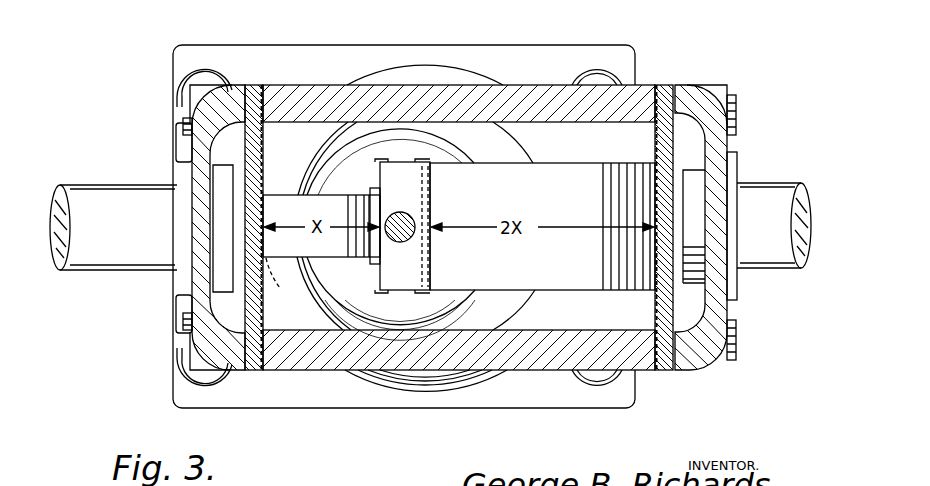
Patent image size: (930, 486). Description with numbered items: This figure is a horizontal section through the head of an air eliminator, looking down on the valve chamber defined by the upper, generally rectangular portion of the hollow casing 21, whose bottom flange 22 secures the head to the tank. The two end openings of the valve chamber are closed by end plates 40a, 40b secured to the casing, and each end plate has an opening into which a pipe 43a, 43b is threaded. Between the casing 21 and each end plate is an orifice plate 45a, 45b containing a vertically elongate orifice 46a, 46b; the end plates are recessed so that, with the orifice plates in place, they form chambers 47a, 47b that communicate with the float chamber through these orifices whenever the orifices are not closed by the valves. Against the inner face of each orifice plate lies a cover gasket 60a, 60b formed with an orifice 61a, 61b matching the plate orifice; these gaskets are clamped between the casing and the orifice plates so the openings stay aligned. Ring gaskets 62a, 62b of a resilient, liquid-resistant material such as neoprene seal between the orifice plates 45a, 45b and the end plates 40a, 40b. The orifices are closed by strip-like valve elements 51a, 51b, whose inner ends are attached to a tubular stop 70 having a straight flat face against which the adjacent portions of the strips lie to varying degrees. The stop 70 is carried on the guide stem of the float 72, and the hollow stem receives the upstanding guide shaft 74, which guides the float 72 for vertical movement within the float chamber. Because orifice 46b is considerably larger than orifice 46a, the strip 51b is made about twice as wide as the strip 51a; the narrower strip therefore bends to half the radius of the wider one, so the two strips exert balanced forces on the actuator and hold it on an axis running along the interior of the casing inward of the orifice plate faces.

The hollow casing 21 is at (440, 72).
The bottom flange 22 is at (530, 53).
The end plate 40a is at (203, 110).
The end plate 40b is at (720, 145).
The pipe 43a is at (130, 262).
The pipe 43b is at (778, 268).
The orifice plate 45a is at (253, 85).
The orifice plate 45b is at (670, 85).
The orifice 46a is at (259, 223).
The orifice 46b is at (655, 153).
The chamber 47a is at (228, 307).
The chamber 47b is at (692, 310).
The valve element 51a is at (340, 200).
The valve element 51b is at (558, 290).
The cover gasket 60a is at (263, 362).
The cover gasket 60b is at (660, 372).
The orifice 61a is at (321, 248).
The orifice 61b is at (622, 291).
The ring gasket 62a is at (235, 355).
The ring gasket 62b is at (673, 372).
The tubular stop 70 is at (412, 200).
The float 72 is at (385, 306).
The guide shaft 74 is at (410, 233).